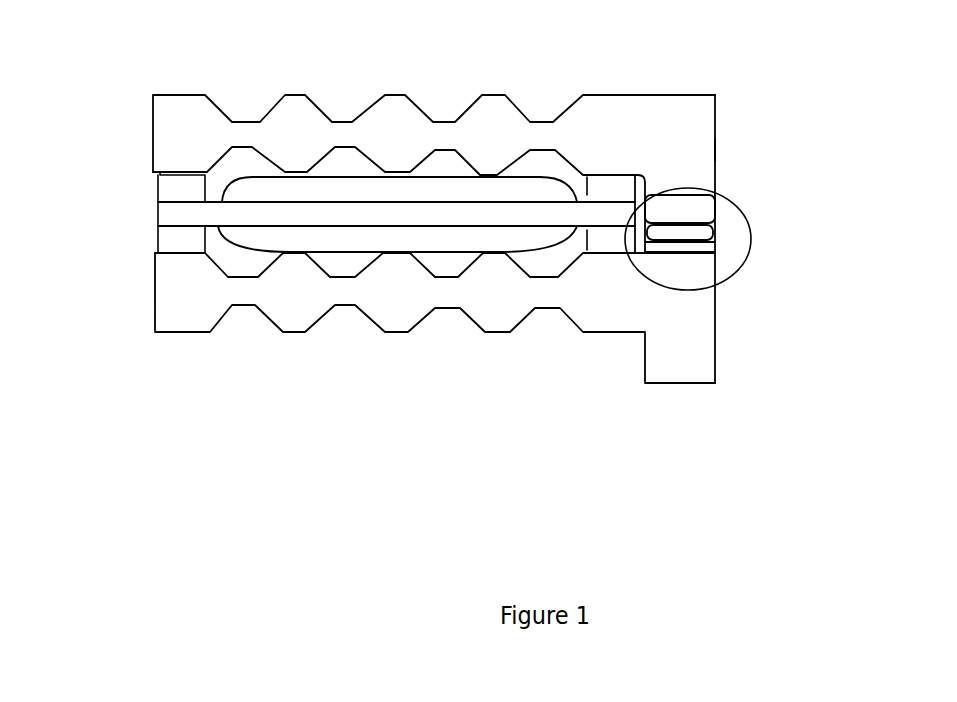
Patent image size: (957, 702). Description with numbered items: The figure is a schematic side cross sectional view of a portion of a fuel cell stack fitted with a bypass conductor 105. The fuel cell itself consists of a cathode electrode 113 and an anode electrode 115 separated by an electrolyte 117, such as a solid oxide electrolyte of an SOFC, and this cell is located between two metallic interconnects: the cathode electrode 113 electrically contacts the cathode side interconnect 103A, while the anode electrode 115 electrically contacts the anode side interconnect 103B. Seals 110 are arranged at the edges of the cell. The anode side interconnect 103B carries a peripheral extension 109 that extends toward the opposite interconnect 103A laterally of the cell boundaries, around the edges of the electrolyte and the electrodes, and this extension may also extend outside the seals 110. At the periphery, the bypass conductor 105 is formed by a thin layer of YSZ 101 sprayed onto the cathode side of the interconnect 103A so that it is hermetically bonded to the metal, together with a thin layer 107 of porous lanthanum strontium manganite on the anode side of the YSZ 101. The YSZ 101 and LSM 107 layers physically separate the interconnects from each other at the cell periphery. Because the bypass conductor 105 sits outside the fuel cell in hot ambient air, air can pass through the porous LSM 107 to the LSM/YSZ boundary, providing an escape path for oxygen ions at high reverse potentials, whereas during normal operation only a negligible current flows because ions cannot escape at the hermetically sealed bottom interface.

The YSZ layer 101 is at (715, 247).
The cathode side interconnect 103A is at (673, 368).
The anode side interconnect 103B is at (705, 117).
The bypass conductor 105 is at (727, 283).
The porous LSM layer 107 is at (855, 178).
The peripheral extension 109 is at (715, 150).
The seals 110 is at (162, 242).
The cathode electrode 113 is at (338, 240).
The anode electrode 115 is at (328, 183).
The electrolyte 117 is at (197, 215).